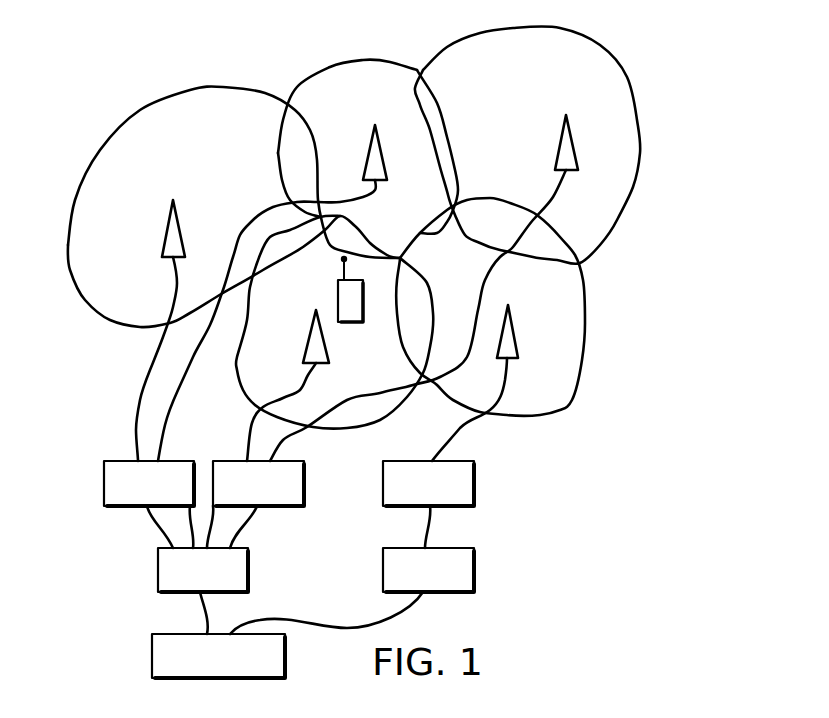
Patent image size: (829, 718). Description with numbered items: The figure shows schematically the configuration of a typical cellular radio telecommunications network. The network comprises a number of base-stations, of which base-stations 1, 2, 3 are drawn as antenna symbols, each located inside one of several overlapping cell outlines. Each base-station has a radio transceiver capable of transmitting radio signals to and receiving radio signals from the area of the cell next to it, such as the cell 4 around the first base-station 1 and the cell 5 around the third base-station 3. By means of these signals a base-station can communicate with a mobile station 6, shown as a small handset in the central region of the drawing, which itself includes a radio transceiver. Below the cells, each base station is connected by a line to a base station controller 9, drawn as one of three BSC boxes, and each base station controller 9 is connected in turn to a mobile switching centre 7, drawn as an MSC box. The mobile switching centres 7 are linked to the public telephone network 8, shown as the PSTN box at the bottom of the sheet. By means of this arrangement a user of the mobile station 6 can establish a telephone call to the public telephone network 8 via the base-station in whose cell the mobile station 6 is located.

The base-station 1 is at (165, 216).
The base-station 2 is at (365, 141).
The base-station 3 is at (306, 333).
The cell 4 is at (120, 327).
The cell 5 is at (246, 384).
The mobile station 6 is at (337, 297).
The mobile switching centre 7 is at (158, 569).
The public telephone network 8 is at (152, 655).
The base station controller 9 is at (104, 482).